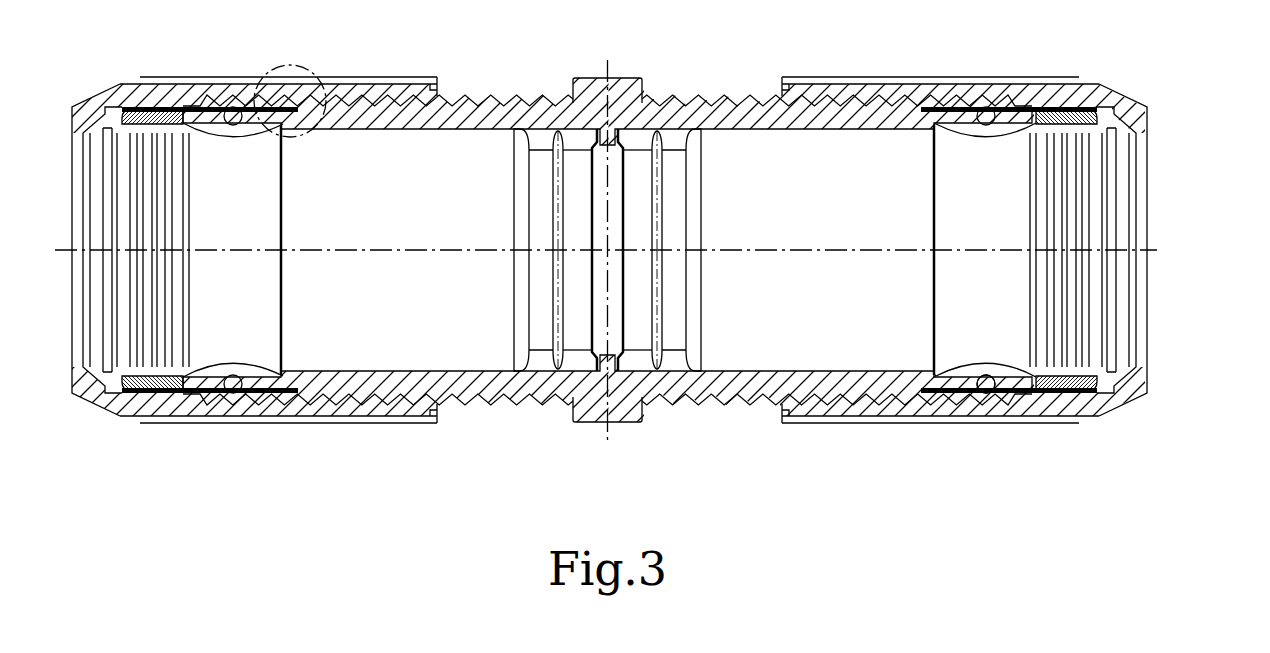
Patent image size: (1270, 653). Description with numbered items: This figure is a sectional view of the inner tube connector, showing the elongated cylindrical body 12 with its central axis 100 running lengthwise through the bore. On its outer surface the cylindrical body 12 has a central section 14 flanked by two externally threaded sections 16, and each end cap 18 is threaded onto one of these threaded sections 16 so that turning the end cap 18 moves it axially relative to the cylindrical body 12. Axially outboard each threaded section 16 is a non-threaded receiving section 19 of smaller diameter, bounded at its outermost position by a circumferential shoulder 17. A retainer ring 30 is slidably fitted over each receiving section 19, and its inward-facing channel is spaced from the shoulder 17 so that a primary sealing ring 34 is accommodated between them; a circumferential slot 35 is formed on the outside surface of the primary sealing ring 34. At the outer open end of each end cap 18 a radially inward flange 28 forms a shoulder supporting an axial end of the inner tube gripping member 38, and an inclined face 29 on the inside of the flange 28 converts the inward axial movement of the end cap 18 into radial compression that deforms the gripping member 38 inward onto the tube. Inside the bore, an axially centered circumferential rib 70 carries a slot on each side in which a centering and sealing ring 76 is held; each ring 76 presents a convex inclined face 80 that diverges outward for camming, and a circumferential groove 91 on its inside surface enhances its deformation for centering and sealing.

The cylindrical body 12 is at (745, 100).
The central section 14 is at (618, 78).
The externally threaded section 16 is at (497, 97).
The circumferential shoulder 17 is at (358, 372).
The end cap 18 is at (378, 78).
The non-threaded receiving section 19 is at (323, 0).
The radially inward flange 28 is at (1130, 105).
The inclined face 29 is at (1120, 130).
The retainer ring 30 is at (1043, 106).
The primary sealing ring 34 is at (1008, 122).
The circumferential slot 35 is at (983, 383).
The inner tube gripping member 38 is at (147, 390).
The circumferential rib 70 is at (605, 363).
The centering and sealing ring 76 is at (673, 362).
The inclined face 80 is at (695, 308).
The circumferential groove 91 is at (655, 232).
The central axis 100 is at (1157, 250).